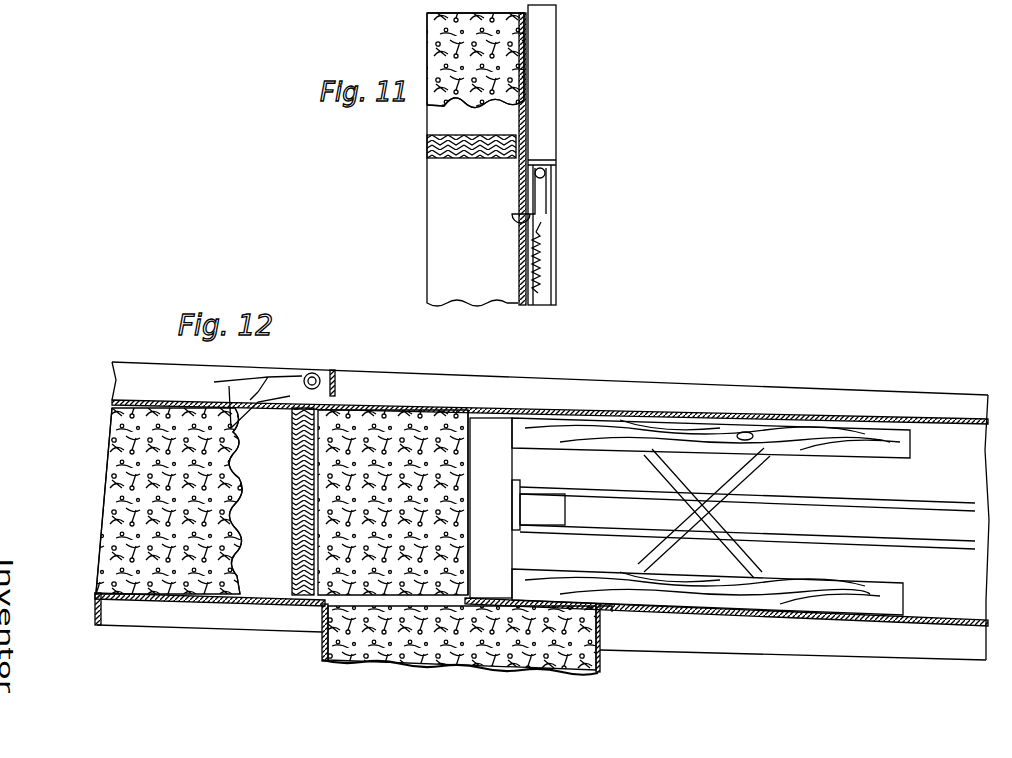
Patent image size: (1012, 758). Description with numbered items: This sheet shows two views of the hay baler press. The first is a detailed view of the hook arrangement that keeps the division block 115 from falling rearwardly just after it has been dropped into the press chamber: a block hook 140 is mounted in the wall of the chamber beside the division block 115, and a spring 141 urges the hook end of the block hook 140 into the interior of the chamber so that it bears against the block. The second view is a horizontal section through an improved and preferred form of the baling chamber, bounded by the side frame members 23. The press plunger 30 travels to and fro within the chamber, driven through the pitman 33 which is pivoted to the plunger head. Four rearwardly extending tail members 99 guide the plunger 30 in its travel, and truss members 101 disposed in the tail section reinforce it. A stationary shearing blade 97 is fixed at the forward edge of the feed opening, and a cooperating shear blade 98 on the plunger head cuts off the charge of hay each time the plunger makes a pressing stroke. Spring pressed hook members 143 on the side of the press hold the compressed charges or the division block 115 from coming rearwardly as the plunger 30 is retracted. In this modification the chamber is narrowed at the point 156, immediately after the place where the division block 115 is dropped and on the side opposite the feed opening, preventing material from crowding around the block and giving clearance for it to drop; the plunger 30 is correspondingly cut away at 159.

In FIG. 12, the side frame members 23 is at (974, 422).
In FIG. 12, the press plunger 30 is at (515, 466).
In FIG. 12, the pitman 33 is at (896, 538).
In FIG. 12, the stationary shearing blade 97 is at (299, 600).
In FIG. 12, the cooperating shear blade 98 is at (491, 598).
In FIG. 12, the tail members 99 is at (912, 454).
In FIG. 12, the truss members 101 is at (730, 546).
In FIG. 11, the division block 115 is at (470, 158).
In FIG. 12, the division block 115 is at (292, 540).
In FIG. 11, the block hook 140 is at (536, 217).
In FIG. 11, the spring 141 is at (540, 277).
In FIG. 12, the spring pressed hook members 143 is at (229, 386).
In FIG. 12, the narrowed point 156 is at (262, 410).
In FIG. 12, the cut away portion 159 is at (578, 411).